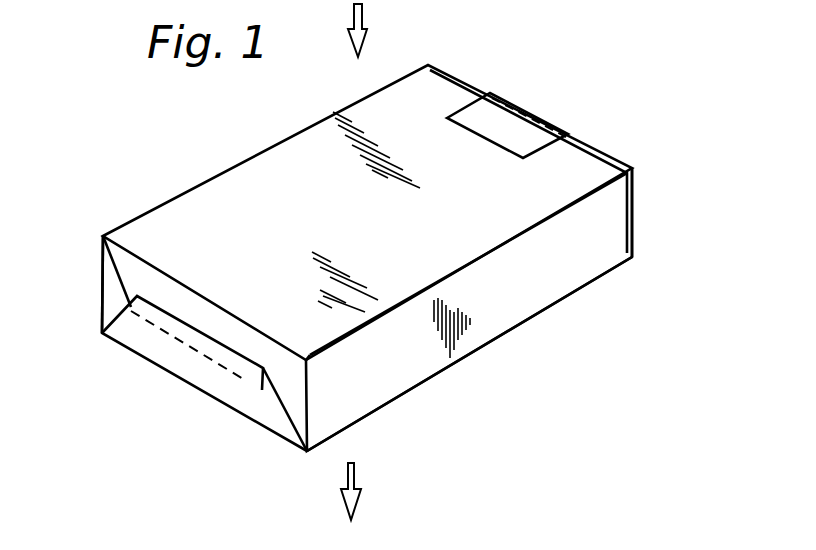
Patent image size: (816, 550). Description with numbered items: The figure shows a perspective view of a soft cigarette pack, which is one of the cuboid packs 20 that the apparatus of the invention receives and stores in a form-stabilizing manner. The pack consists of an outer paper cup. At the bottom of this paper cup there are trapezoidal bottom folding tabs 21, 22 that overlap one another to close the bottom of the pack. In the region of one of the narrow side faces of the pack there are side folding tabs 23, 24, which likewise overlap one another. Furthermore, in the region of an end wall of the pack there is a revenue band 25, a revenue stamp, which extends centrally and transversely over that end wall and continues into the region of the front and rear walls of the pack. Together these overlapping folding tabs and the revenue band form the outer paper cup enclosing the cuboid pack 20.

The cuboid pack 20 is at (219, 156).
The bottom folding tab 21 is at (133, 274).
The bottom folding tab 22 is at (130, 325).
The side folding tab 23 is at (585, 207).
The side folding tab 24 is at (530, 280).
The revenue band 25 is at (507, 125).